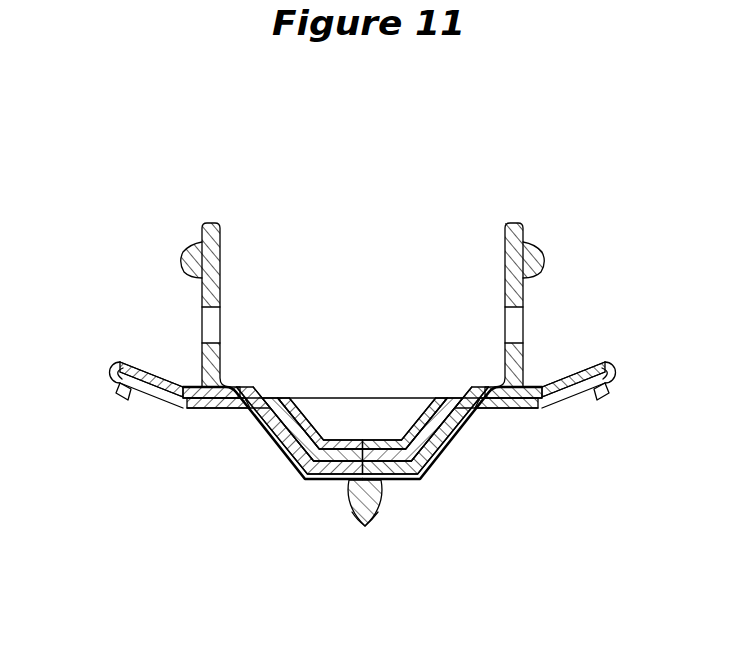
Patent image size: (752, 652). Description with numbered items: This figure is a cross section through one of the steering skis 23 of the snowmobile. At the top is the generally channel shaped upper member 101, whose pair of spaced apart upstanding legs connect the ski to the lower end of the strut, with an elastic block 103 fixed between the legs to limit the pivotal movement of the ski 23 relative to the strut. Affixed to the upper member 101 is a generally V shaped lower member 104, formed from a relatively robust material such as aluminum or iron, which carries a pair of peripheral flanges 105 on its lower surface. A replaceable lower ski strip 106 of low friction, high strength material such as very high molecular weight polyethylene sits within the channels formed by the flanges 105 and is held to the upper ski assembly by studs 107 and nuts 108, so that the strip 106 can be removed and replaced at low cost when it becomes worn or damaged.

The steering ski 23 is at (343, 200).
The upper member 101 is at (515, 238).
The elastic block 103 is at (364, 412).
The lower member 104 is at (173, 387).
The peripheral flanges 105 is at (113, 390).
The lower ski strip 106 is at (275, 452).
The studs 107 is at (377, 498).
The nuts 108 is at (362, 518).